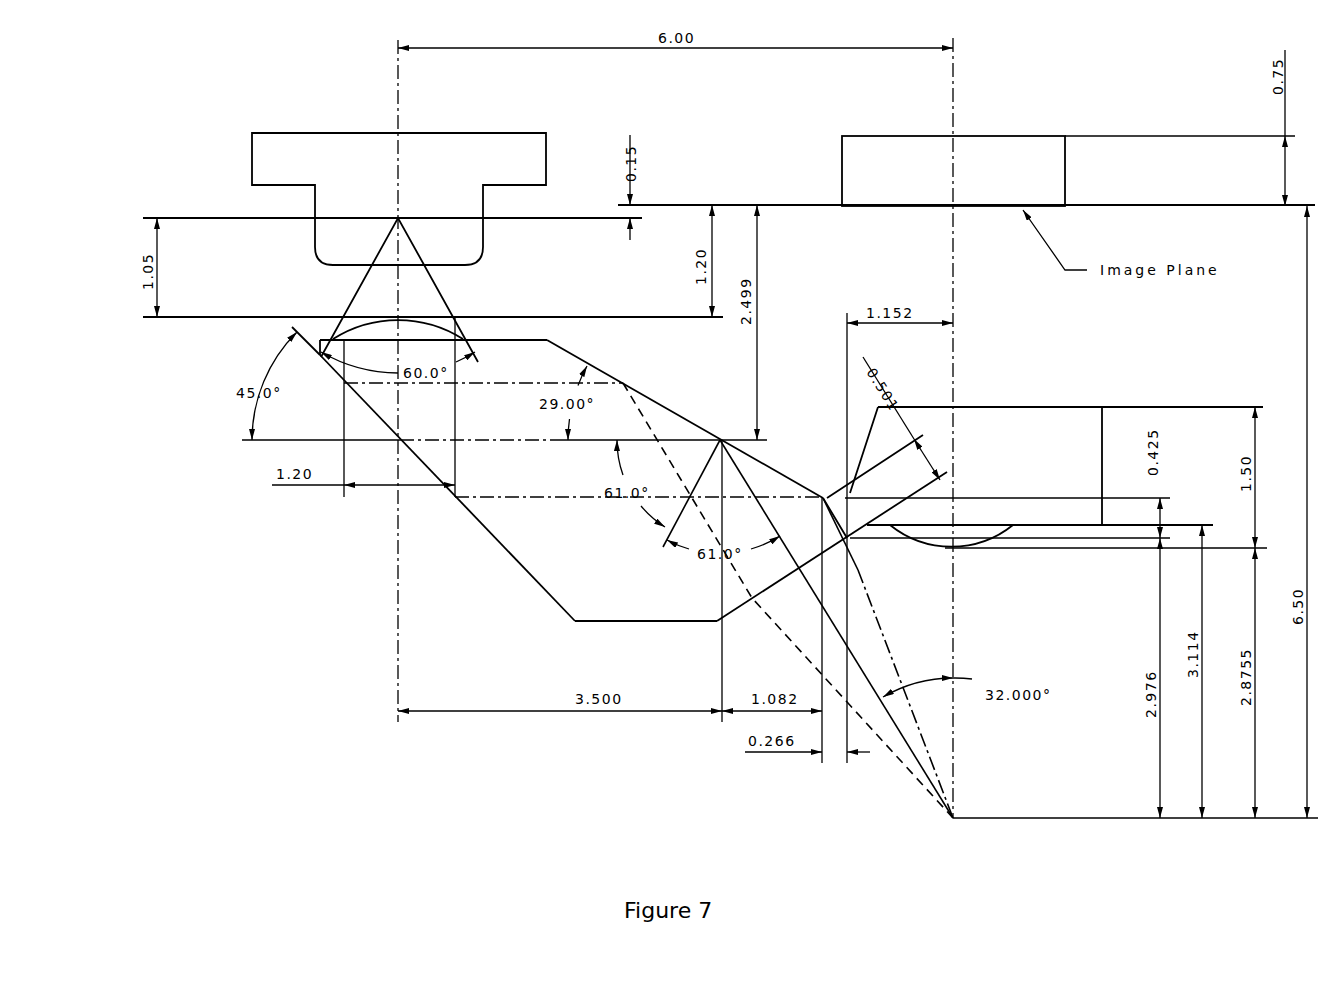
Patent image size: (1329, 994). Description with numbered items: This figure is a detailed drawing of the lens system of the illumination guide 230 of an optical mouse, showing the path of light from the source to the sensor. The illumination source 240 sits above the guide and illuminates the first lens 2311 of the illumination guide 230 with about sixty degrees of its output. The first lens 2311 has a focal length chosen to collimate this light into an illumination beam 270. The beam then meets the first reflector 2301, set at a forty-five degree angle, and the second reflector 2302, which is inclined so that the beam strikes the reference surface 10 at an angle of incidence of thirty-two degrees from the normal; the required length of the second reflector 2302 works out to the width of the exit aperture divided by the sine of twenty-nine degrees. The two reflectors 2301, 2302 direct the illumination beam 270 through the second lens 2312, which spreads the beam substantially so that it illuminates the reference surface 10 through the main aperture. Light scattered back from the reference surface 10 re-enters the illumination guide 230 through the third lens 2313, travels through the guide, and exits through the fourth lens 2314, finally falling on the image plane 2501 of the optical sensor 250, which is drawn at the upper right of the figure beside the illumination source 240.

The reference surface 10 is at (970, 600).
The illumination guide 230 is at (621, 480).
The illumination source 240 is at (399, 199).
The optical sensor 250 is at (1068, 171).
The illumination beam 270 is at (392, 410).
The first reflector 2301 is at (482, 530).
The second reflector 2302 is at (690, 407).
The first lens 2311 is at (335, 305).
The second lens 2312 is at (747, 620).
The third lens 2313 is at (968, 555).
The fourth lens 2314 is at (970, 398).
The image plane 2501 is at (946, 214).